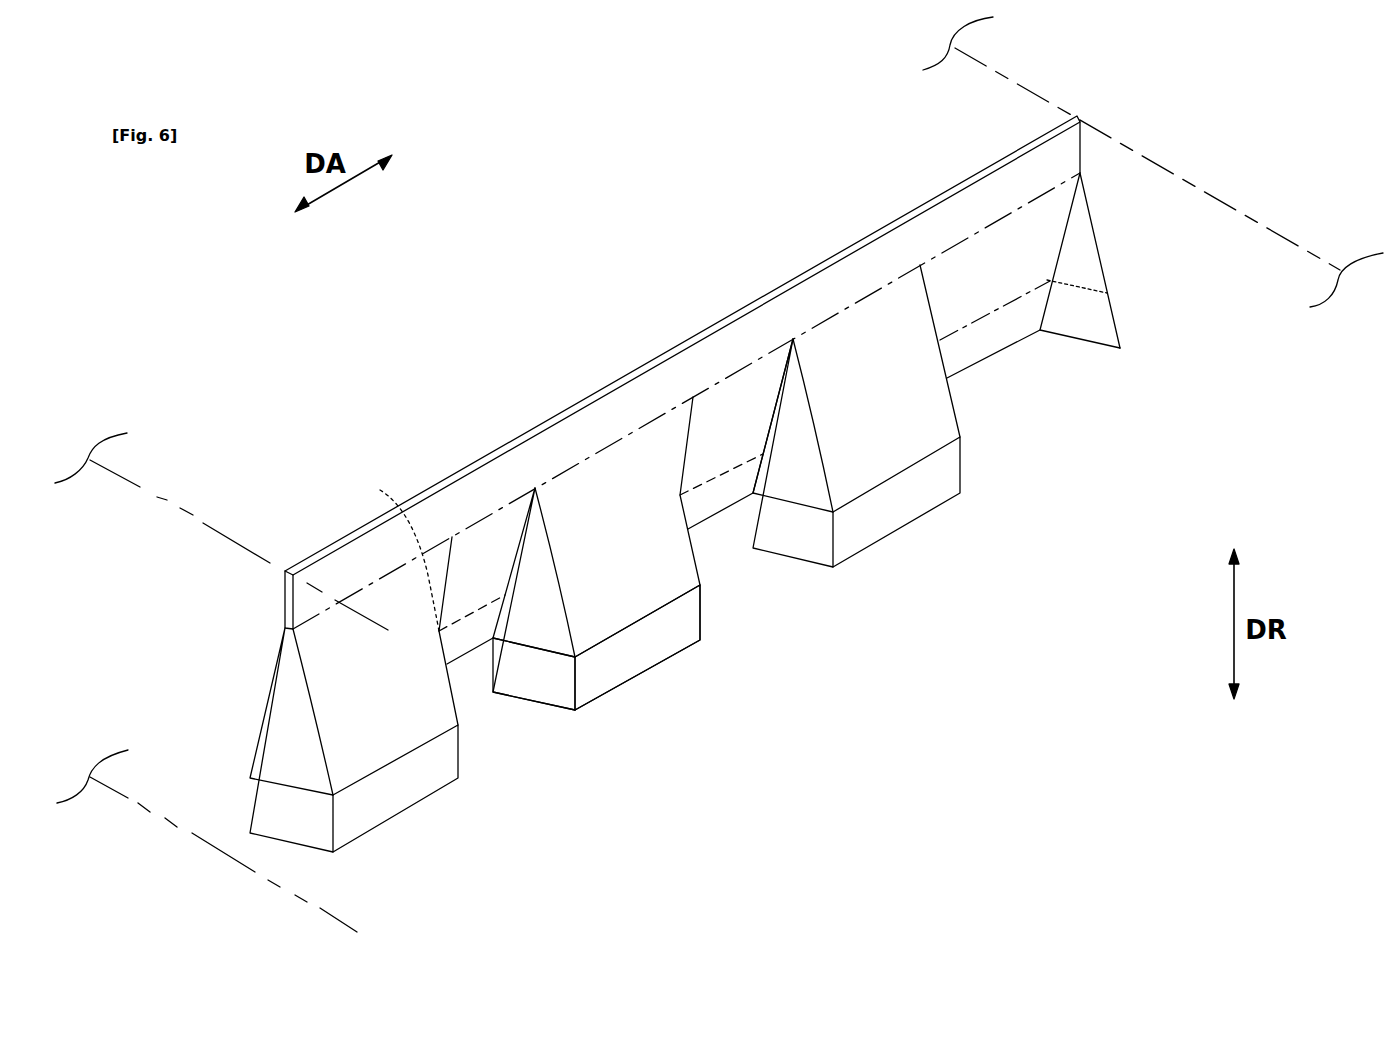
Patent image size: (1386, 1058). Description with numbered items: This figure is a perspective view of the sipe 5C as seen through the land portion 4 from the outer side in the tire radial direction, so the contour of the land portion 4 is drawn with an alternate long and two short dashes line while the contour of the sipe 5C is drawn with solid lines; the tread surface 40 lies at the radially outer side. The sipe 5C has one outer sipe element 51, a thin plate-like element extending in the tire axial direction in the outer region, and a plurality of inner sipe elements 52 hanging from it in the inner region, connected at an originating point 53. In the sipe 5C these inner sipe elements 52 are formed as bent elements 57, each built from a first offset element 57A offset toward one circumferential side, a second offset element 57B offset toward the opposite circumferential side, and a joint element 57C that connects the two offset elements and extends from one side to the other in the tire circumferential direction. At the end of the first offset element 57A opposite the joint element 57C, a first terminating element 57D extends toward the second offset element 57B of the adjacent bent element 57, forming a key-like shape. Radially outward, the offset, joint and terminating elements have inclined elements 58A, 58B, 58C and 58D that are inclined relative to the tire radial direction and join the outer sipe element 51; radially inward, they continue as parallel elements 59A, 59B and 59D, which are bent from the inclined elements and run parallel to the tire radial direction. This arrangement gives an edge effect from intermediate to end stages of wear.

The land portion 4 is at (198, 702).
The tread surface 40 is at (781, 463).
The outer sipe element 51 is at (697, 344).
The inner sipe elements 52 is at (1092, 226).
The originating point 53 is at (580, 463).
The bent element 57 is at (846, 427).
The first offset element 57A is at (878, 430).
The second offset element 57B is at (732, 418).
The joint element 57C is at (673, 425).
The first terminating element 57D is at (787, 473).
The inclined element 58A is at (587, 597).
The inclined element 58B is at (498, 540).
The inclined element 58C is at (380, 490).
The inclined element 58D is at (528, 617).
The parallel element 59A is at (628, 652).
The parallel element 59B is at (447, 664).
The parallel element 59D is at (497, 677).
The sipe 5C is at (1073, 236).